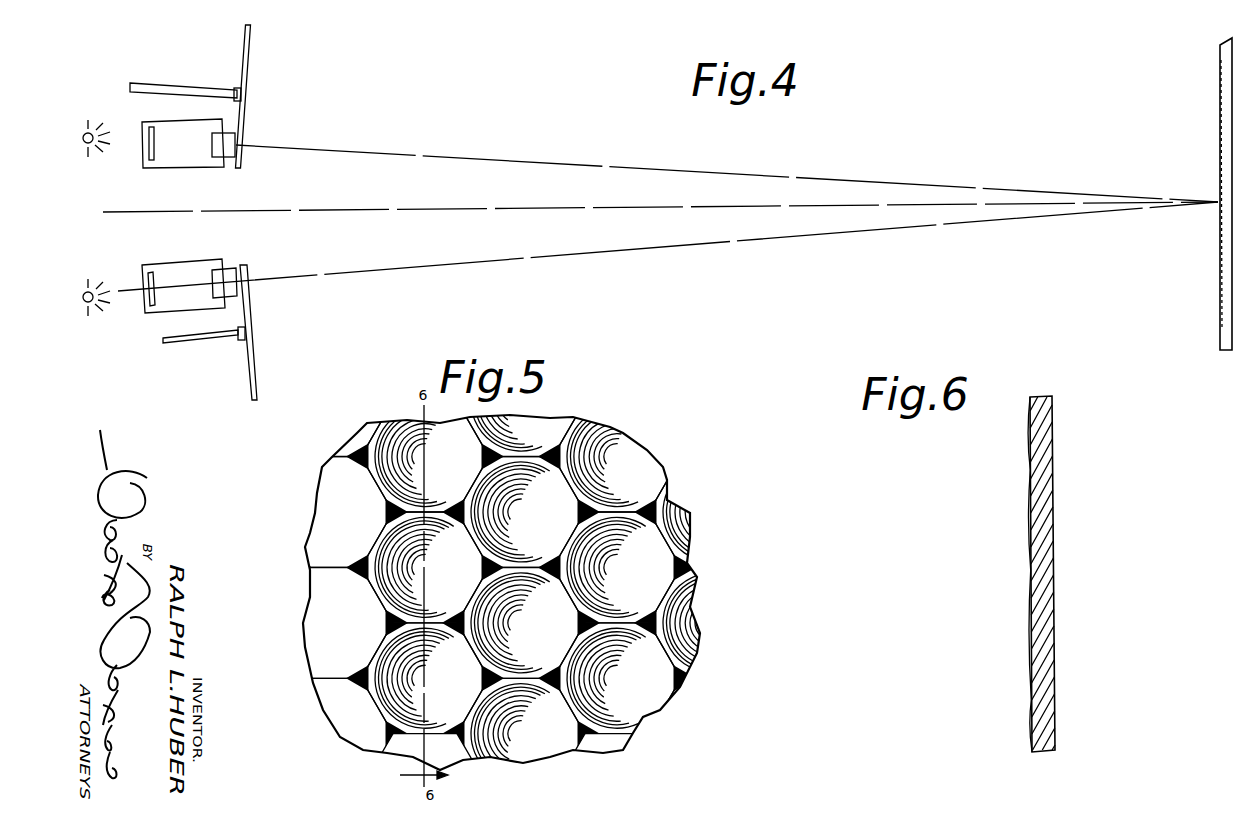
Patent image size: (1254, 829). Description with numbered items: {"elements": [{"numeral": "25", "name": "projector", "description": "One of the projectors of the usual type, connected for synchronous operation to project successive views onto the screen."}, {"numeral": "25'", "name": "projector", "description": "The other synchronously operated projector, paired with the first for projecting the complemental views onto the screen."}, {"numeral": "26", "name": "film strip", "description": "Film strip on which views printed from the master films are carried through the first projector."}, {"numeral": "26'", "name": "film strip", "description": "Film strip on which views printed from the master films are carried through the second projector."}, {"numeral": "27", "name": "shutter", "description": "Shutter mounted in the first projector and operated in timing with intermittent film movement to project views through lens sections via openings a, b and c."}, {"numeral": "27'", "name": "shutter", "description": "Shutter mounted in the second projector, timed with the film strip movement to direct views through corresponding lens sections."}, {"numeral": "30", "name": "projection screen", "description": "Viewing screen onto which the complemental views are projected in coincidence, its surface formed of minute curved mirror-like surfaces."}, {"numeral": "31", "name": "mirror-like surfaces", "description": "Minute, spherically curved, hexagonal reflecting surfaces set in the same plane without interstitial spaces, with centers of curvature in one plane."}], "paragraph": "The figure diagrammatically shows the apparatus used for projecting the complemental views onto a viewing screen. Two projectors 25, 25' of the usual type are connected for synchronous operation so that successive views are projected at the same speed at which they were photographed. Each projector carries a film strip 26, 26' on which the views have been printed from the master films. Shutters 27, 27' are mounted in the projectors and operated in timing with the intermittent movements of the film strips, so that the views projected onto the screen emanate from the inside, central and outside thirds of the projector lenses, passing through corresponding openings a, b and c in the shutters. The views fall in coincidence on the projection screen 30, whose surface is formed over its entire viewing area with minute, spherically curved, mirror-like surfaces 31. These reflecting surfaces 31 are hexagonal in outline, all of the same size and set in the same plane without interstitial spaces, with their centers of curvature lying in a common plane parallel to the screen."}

In FIG. 4, the projector 25 is at (189, 269).
In FIG. 4, the projector 25' is at (188, 160).
In FIG. 4, the light source 26 is at (119, 277).
In FIG. 4, the light source 26' is at (118, 161).
In FIG. 4, the support standard 27 is at (232, 332).
In FIG. 4, the support standard 27' is at (225, 96).
In FIG. 4, the screen plate 30 is at (1225, 78).
In FIG. 5, the screen plate 30 is at (302, 527).
In FIG. 6, the screen plate 30 is at (1046, 521).
In FIG. 4, the lens element 31 is at (1218, 143).
In FIG. 5, the lens element 31 is at (623, 668).
In FIG. 6, the lens element 31 is at (1032, 468).